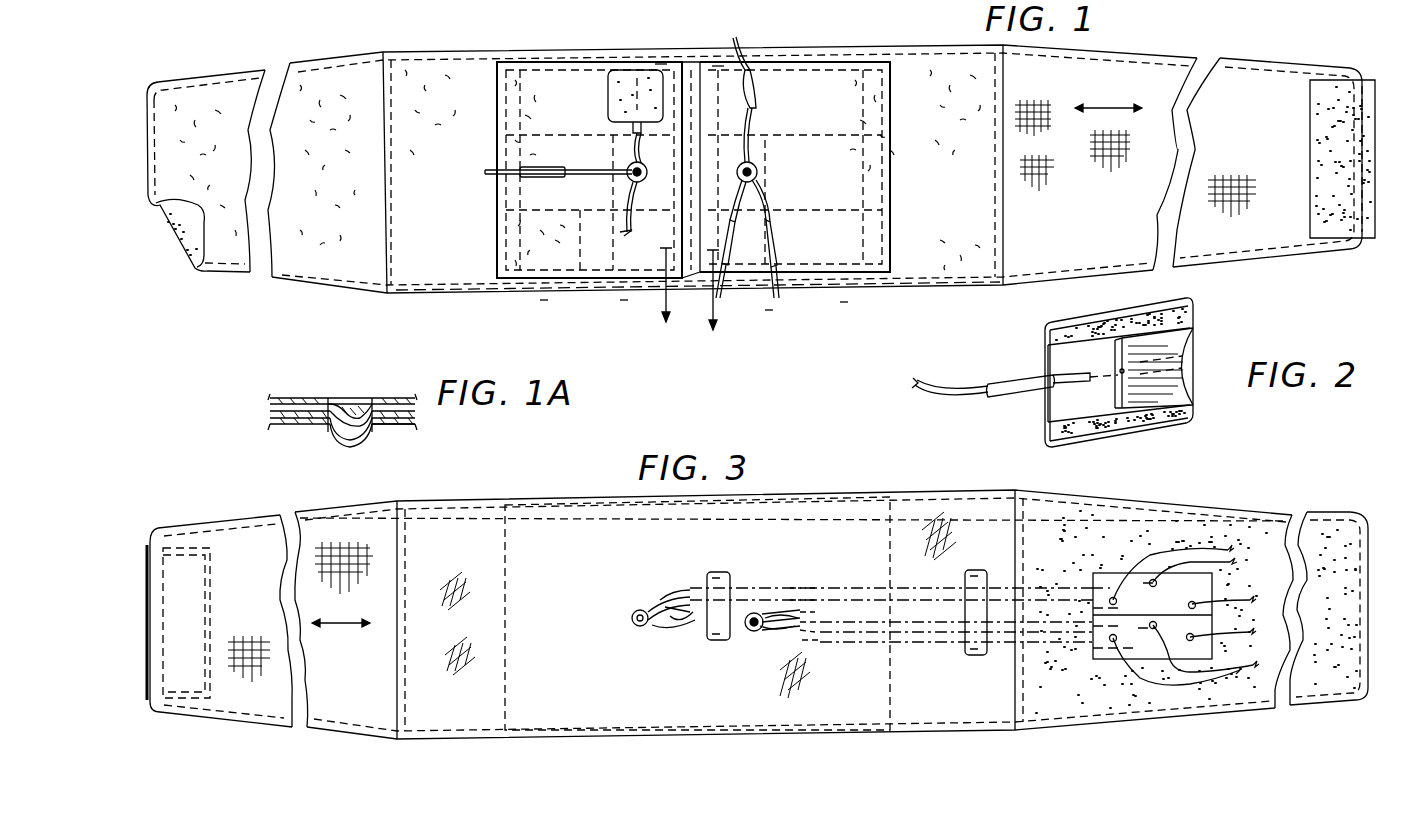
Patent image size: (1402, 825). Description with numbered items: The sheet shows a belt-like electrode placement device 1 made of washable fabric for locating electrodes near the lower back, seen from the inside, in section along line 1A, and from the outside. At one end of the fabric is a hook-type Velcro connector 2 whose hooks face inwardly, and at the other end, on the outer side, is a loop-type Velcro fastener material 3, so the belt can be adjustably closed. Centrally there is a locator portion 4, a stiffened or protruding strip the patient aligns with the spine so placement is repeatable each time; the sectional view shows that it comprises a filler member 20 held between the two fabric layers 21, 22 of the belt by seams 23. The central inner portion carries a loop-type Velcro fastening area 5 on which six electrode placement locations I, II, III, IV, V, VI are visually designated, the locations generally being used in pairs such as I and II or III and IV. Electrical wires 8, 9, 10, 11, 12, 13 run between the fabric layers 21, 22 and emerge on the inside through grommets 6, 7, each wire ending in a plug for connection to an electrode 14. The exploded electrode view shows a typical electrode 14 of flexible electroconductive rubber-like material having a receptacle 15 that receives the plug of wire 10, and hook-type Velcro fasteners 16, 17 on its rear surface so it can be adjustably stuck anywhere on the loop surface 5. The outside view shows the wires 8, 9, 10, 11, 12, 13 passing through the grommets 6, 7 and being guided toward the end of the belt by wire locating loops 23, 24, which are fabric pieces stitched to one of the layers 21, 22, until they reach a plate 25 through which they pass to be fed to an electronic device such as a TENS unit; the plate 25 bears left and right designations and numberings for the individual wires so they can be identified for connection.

In FIG. 1, the belt-like electrode placement device 1 is at (922, 45).
In FIG. 3, the belt-like electrode placement device 1 is at (872, 510).
In FIG. 1, the section line 1A— 1A is at (690, 302).
In FIG. 1, the hook-type Velcro connector 2 is at (1370, 80).
In FIG. 3, the hook-type Velcro connector 2 is at (152, 590).
In FIG. 1, the loop-type Velcro fastener material 3 is at (242, 92).
In FIG. 1, the locator portion 4 is at (688, 75).
In FIG. 1A, the locator portion 4 is at (348, 444).
In FIG. 1, the loop-type Velcro fastening area 5 is at (840, 80).
In FIG. 1A, the loop-type Velcro fastening area 5 is at (413, 428).
In FIG. 1, the grommet 6 is at (630, 170).
In FIG. 3, the grommet 6 is at (752, 632).
In FIG. 1, the grommet 7 is at (758, 170).
In FIG. 3, the grommet 7 is at (630, 625).
In FIG. 1, the electrical wire 8 is at (552, 172).
In FIG. 3, the electrical wire 8 is at (778, 632).
In FIG. 1, the electrical wire 9 is at (644, 195).
In FIG. 3, the electrical wire 9 is at (792, 634).
In FIG. 1, the electrical wire 10 is at (644, 150).
In FIG. 2, the electrical wire 10 is at (942, 385).
In FIG. 3, the electrical wire 10 is at (775, 612).
In FIG. 1, the electrical wire 11 is at (772, 190).
In FIG. 3, the electrical wire 11 is at (673, 628).
In FIG. 1, the electrical wire 12 is at (732, 185).
In FIG. 3, the electrical wire 12 is at (648, 605).
In FIG. 1, the electrical wire 13 is at (768, 99).
In FIG. 3, the electrical wire 13 is at (668, 600).
In FIG. 1, the electrode 14 is at (620, 75).
In FIG. 2, the electrode 14 is at (1200, 333).
In FIG. 2, the receptacle 15 is at (1165, 362).
In FIG. 2, the hook-type Velcro fastener 16 is at (1185, 314).
In FIG. 2, the hook-type Velcro fastener 17 is at (1185, 415).
In FIG. 1A, the filler member 20 is at (352, 404).
In FIG. 1A, the fabric layer 21 is at (303, 398).
In FIG. 3, the fabric layer 21 is at (462, 510).
In FIG. 1, the fabric layer 22 is at (438, 272).
In FIG. 1A, the fabric layer 22 is at (290, 426).
In FIG. 1A, the seam / wire locating loop 23 is at (328, 430).
In FIG. 3, the seam / wire locating loop 23 is at (724, 572).
In FIG. 3, the wire locating loop 24 is at (980, 652).
In FIG. 3, the plate 25 is at (1108, 573).
In FIG. 1, the electrode placement location I is at (662, 66).
In FIG. 1, the electrode placement location II is at (717, 68).
In FIG. 1, the electrode placement location III is at (640, 265).
In FIG. 1, the electrode placement location IV is at (753, 282).
In FIG. 1, the electrode placement location V is at (548, 268).
In FIG. 1, the electrode placement location VI is at (852, 268).